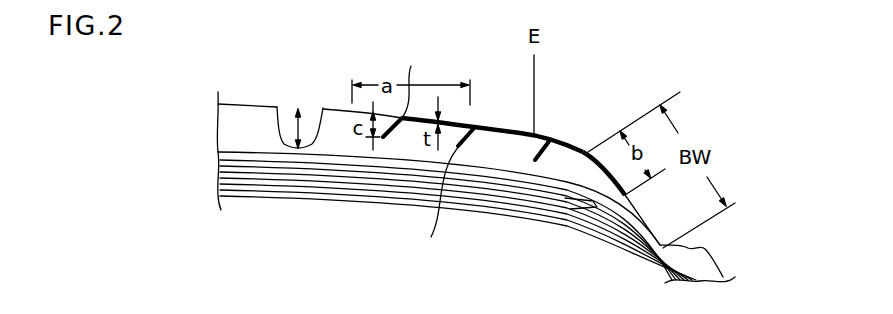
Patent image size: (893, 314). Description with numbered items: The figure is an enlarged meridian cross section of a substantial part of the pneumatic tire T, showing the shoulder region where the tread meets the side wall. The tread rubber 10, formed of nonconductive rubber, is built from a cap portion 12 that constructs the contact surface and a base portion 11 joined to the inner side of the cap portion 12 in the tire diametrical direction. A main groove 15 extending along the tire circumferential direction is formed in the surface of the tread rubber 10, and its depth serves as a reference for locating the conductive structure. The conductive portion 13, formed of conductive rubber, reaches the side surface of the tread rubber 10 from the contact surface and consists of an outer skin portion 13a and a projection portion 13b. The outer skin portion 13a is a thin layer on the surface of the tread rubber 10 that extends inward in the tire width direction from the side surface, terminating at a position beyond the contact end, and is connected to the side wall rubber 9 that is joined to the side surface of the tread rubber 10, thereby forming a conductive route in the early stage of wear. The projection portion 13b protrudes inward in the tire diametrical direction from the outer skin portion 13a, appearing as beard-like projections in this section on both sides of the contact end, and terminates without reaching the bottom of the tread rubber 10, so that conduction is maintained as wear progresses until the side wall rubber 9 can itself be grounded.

The side wall rubber 9 is at (717, 263).
The tread rubber 10 is at (236, 104).
The base portion 11 is at (227, 152).
The cap portion 12 is at (228, 128).
The conductive portion 13 is at (504, 153).
The outer skin portion 13a is at (497, 124).
The projection portion 13b is at (475, 131).
The main groove 15 is at (283, 133).
The pneumatic tire T is at (273, 228).